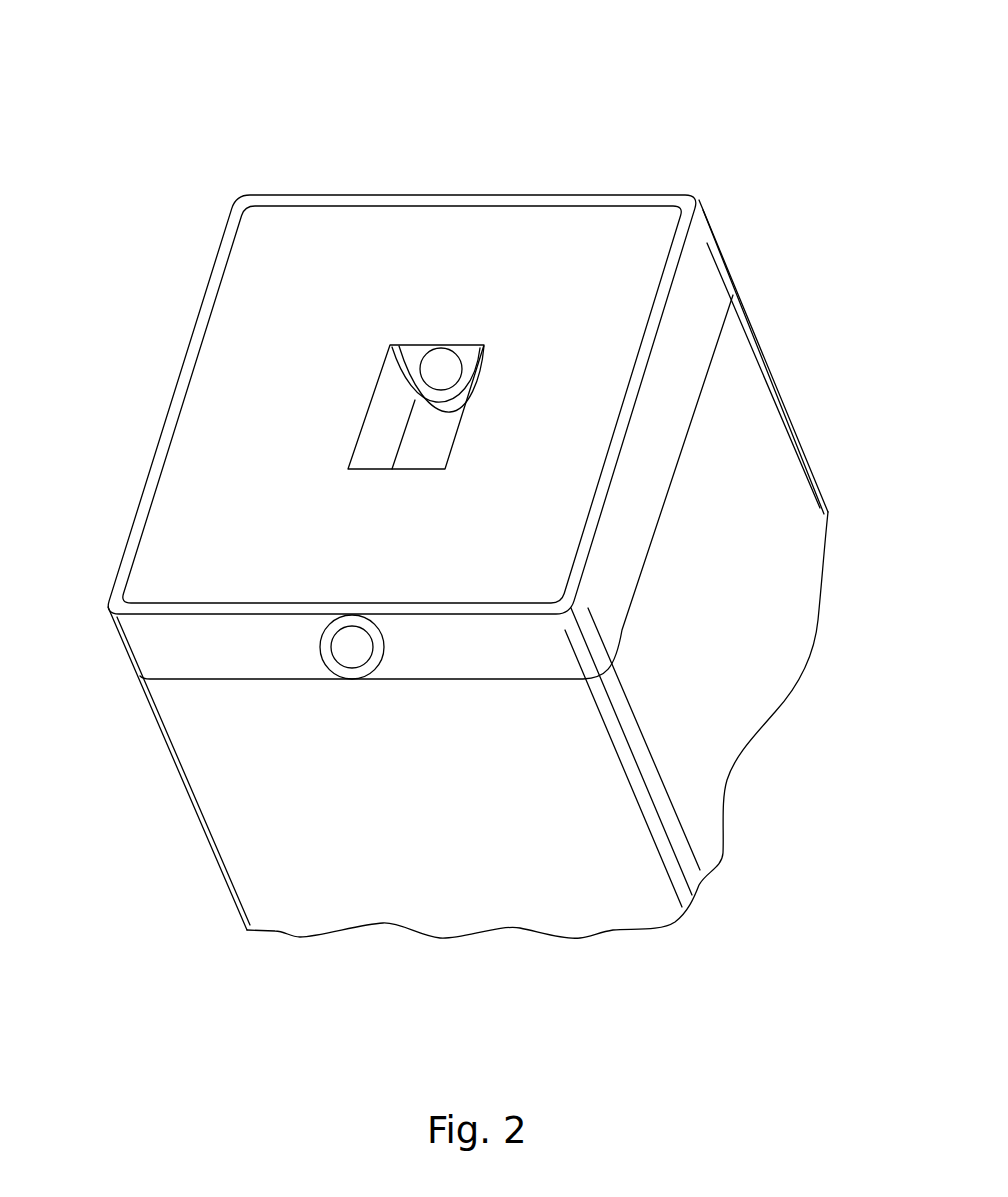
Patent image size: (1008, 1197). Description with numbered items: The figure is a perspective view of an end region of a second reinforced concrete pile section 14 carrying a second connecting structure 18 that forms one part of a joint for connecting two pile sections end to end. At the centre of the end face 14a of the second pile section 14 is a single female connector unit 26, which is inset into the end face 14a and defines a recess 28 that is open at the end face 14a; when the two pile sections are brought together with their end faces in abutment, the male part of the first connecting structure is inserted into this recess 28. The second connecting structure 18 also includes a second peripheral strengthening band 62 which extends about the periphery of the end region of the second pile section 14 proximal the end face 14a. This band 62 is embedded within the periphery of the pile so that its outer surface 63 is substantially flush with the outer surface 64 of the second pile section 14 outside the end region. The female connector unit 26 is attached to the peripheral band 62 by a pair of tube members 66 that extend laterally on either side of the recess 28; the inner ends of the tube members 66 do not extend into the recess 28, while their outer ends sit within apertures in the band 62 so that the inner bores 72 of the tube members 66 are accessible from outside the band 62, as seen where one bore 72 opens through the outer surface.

The second connecting structure 18 is at (180, 122).
The second pile section 14 is at (758, 433).
The end face of the second pile section 14a is at (218, 448).
The female connector unit 26 is at (383, 383).
The recess 28 is at (392, 423).
The second peripheral strengthening band 62 is at (698, 201).
The outer surface of the second peripheral band 63 is at (708, 283).
The outer surface of the second pile section 64 is at (755, 607).
The tube members 66 is at (457, 349).
The inner bores of the tube members 72 is at (360, 657).